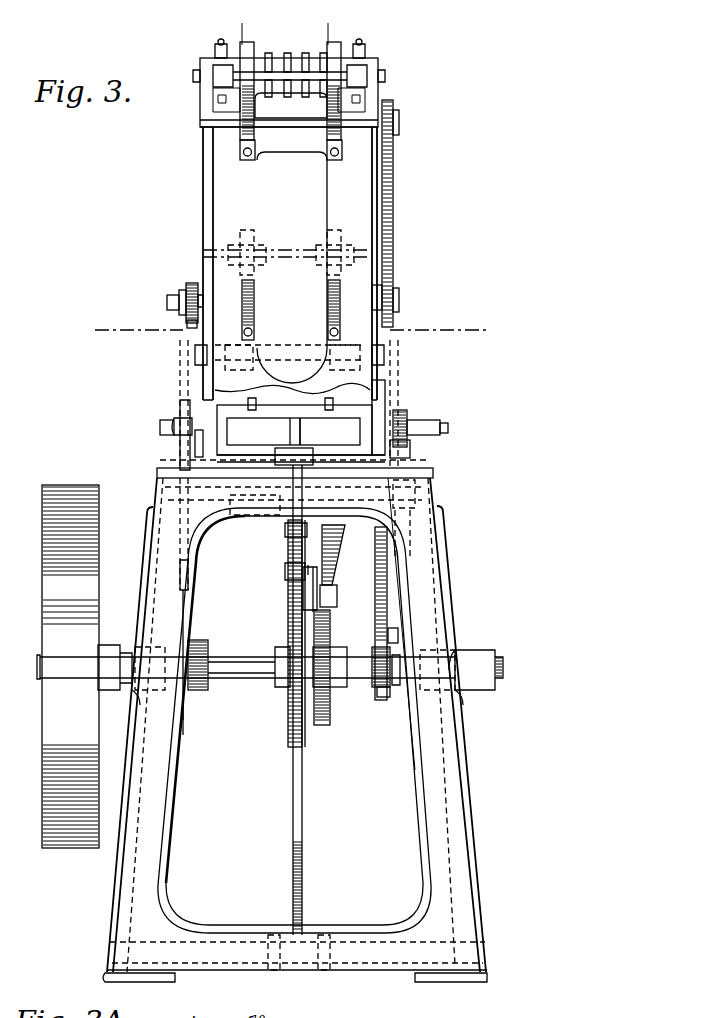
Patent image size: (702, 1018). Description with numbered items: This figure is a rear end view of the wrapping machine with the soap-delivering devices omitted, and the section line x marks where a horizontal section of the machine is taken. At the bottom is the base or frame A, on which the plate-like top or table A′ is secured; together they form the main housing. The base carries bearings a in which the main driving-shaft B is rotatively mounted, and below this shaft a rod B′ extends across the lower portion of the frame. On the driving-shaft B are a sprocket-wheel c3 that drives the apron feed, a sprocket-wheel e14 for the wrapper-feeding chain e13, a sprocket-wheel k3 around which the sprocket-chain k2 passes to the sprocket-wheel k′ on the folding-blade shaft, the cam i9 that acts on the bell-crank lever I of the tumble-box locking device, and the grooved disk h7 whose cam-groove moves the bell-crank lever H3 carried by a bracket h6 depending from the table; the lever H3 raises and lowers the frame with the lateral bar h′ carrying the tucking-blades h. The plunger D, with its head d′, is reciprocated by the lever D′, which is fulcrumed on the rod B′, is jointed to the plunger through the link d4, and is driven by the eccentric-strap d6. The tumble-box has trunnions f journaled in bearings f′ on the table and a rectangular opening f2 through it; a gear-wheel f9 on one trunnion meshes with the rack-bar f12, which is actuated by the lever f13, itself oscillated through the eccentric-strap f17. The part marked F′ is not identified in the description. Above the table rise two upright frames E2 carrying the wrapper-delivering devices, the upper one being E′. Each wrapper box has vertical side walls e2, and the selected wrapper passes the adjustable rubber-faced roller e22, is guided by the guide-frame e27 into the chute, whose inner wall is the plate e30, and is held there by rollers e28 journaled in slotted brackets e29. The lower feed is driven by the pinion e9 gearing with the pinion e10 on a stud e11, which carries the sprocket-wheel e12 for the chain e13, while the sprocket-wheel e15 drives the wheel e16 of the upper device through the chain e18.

The upper wrapper-feeding device E′ is at (304, 27).
The vertical side walls e2 is at (246, 45).
The rubber-faced roller e22 is at (290, 83).
The guide-frame e27 is at (291, 105).
The slotted brackets e29 is at (326, 133).
The upright frames E2 is at (205, 187).
The plate e30 is at (292, 250).
The lateral bar h′ is at (291, 354).
The rollers e28 is at (242, 153).
The wheel e16 is at (395, 108).
The chain e18 is at (393, 153).
The sprocket-wheel e15 is at (399, 297).
The pinion e9 is at (190, 282).
The pinion e10 is at (182, 292).
The stud e11 is at (167, 300).
The sprocket-wheel e12 is at (187, 326).
The section line x is at (285, 330).
The slide F′ is at (293, 413).
The rectangular opening f2 is at (293, 431).
The tucking-blades h is at (248, 397).
The head d′ is at (304, 418).
The gear-wheel f9 is at (400, 410).
The bearings f′ is at (422, 422).
The trunnions f is at (158, 432).
The rack-bar f12 is at (410, 450).
The chain e13 is at (180, 405).
The sprocket-wheel k′ is at (178, 468).
The plunger D is at (300, 458).
The top or table A′ is at (430, 477).
The base or frame A is at (452, 822).
The rod B′ is at (480, 948).
The link d4 is at (280, 497).
The sprocket-chain k2 is at (190, 582).
The lever D′ is at (298, 777).
The eccentric-strap d6 is at (287, 614).
The bracket h6 is at (340, 540).
The bell-crank lever H3 is at (335, 588).
The grooved disk h7 is at (325, 707).
The bell-crank lever I is at (380, 600).
The lever f13 is at (405, 563).
The cam i9 is at (380, 699).
The eccentric-strap f17 is at (398, 692).
The main driving-shaft B is at (503, 667).
The bearings a is at (128, 633).
The sprocket-wheel c3 is at (195, 688).
The sprocket-wheel k3 is at (204, 652).
The sprocket-wheel e14 is at (183, 718).